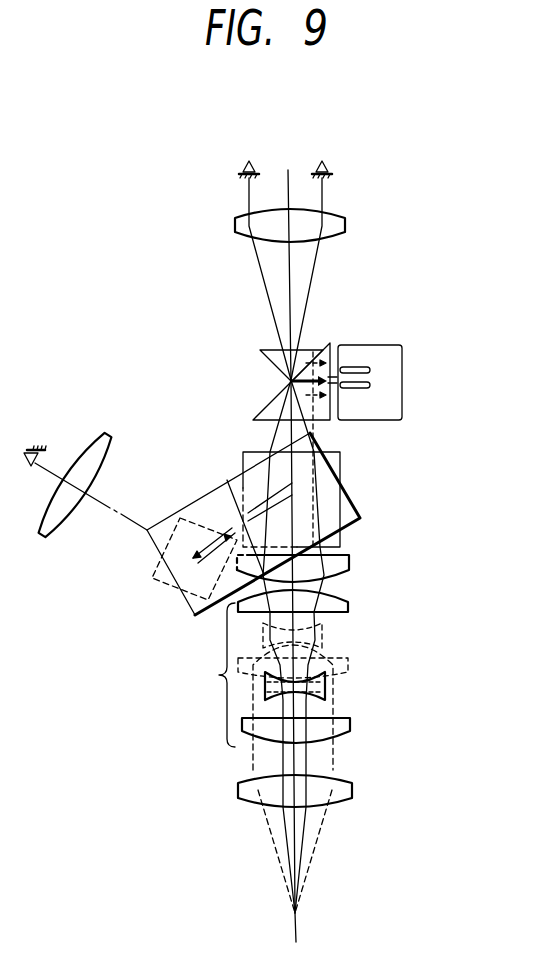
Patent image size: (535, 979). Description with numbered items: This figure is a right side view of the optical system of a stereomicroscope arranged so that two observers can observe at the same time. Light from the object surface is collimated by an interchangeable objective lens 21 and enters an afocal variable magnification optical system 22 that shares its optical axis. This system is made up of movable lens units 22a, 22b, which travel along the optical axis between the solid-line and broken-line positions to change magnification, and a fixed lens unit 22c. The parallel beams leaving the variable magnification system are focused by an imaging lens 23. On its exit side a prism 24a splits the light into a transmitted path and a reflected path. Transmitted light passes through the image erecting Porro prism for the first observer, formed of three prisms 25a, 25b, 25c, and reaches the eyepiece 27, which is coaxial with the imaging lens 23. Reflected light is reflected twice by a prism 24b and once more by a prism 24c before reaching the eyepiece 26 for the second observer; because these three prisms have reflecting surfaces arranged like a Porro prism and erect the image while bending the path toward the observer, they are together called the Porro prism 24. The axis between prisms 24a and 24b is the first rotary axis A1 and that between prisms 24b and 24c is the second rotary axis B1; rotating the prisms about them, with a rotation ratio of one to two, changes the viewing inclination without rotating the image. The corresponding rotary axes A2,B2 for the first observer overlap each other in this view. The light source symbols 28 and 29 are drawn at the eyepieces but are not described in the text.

The objective lens 21 is at (247, 790).
The afocal variable magnification optical system 22 is at (259, 686).
The movable lens unit 22a is at (347, 730).
The movable lens unit 22b is at (327, 693).
The fixed lens unit 22c is at (343, 604).
The imaging lens 23 is at (347, 566).
The Porro prism 24 is at (165, 487).
The prism 24a is at (335, 463).
The prism 24b is at (212, 498).
The prism 24c is at (162, 572).
The prism 25a is at (262, 417).
The prism 25b is at (388, 406).
The prism 25c is at (303, 348).
The eyepiece 26 is at (94, 436).
The eyepiece 27 is at (333, 218).
The light source 28 is at (30, 449).
The light sources 29 is at (322, 162).
The first rotary axis A1 is at (297, 497).
The rotary axes A2,B2 is at (353, 368).
The second rotary axis B1 is at (196, 564).